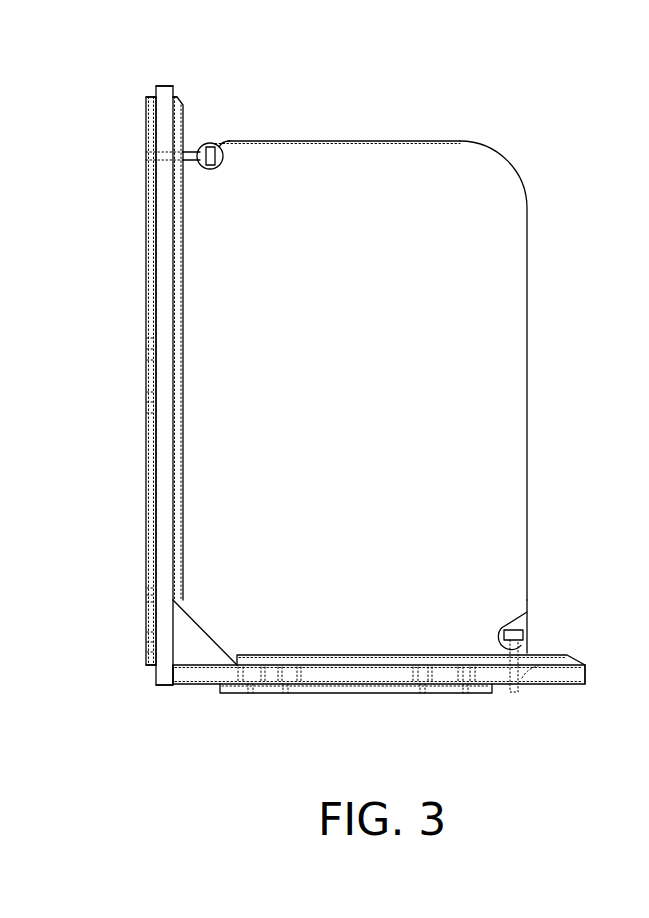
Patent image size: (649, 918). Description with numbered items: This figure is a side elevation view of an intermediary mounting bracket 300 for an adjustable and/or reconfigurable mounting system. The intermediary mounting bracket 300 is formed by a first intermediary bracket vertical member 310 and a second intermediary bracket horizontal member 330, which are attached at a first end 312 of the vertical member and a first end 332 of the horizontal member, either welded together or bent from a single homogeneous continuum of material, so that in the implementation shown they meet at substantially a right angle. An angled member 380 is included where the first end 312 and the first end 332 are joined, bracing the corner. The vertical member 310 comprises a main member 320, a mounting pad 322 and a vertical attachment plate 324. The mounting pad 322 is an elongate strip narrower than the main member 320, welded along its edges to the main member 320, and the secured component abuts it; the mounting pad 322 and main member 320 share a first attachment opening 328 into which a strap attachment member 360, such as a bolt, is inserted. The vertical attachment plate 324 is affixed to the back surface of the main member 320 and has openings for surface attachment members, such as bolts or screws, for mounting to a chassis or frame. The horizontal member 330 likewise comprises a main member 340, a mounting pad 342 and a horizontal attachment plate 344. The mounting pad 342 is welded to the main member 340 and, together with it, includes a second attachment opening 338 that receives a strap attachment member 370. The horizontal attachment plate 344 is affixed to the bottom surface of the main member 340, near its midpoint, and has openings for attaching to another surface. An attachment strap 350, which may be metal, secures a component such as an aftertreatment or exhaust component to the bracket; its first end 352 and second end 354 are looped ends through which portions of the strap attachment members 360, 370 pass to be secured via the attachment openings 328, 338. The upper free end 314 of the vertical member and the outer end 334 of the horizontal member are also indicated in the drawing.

The intermediary mounting bracket 300 is at (594, 154).
The first intermediary bracket vertical member 310 is at (109, 437).
The first end of the first intermediary bracket vertical member 312 is at (128, 680).
The first end of upright member 314 is at (128, 91).
The main member 320 is at (165, 86).
The mounting pad 322 is at (184, 120).
The vertical attachment plate 324 is at (145, 379).
The first attachment opening 328 is at (150, 160).
The second intermediary bracket horizontal member 330 is at (355, 610).
The first end of the second intermediary bracket horizontal member 332 is at (192, 705).
The second end of base member 334 is at (580, 707).
The second attachment opening 338 is at (536, 676).
The main member 340 is at (398, 688).
The mounting pad 342 is at (282, 660).
The horizontal attachment plate 344 is at (310, 695).
The attachment strap 350 is at (528, 318).
The first end of the attachment strap 352 is at (281, 123).
The second end of the attachment strap 354 is at (584, 599).
The strap attachment member 360 is at (222, 150).
The strap attachment member 370 is at (524, 636).
The angled member 380 is at (224, 637).